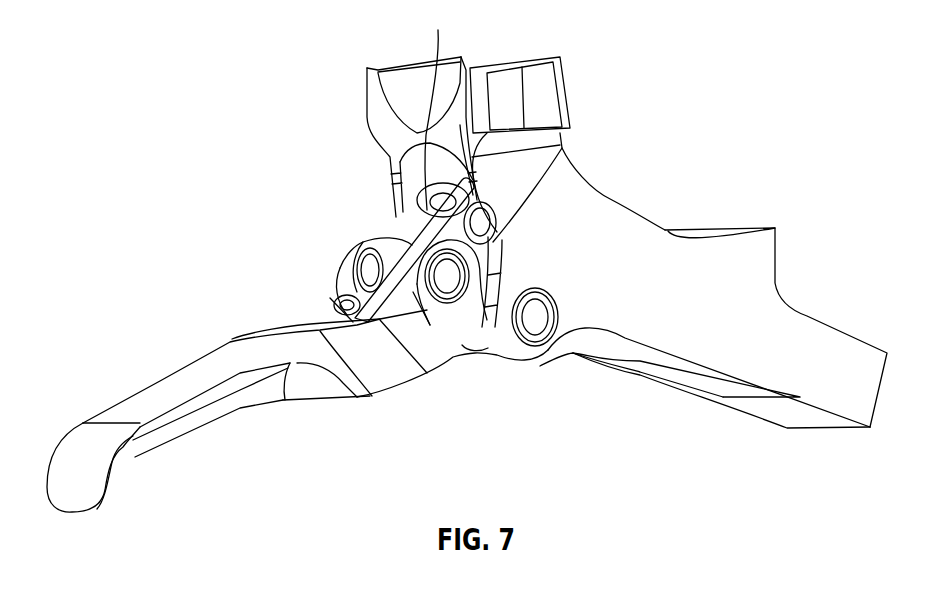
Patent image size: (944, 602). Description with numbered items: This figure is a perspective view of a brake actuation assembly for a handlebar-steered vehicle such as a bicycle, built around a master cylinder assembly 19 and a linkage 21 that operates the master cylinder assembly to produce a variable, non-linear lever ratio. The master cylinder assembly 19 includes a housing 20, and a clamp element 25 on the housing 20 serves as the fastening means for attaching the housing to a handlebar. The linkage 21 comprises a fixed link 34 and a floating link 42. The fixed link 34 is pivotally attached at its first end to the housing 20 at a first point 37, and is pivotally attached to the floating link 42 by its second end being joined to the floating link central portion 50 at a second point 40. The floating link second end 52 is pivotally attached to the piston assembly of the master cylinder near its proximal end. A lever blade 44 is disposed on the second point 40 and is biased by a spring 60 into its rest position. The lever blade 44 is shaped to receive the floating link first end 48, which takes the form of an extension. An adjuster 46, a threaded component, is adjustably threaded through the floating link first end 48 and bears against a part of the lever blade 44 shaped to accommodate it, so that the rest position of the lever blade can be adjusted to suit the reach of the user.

The master cylinder assembly 19 is at (612, 198).
The housing 20 is at (666, 229).
The linkage 21 is at (374, 213).
The clamp element 25 is at (548, 93).
The fixed link 34 is at (477, 357).
The first point 37 is at (550, 340).
The second point 40 is at (450, 280).
The floating link 42 is at (390, 208).
The lever blade 44 is at (216, 410).
The adjuster 46 is at (340, 300).
The floating link first end 48 is at (340, 322).
The floating link central portion 50 is at (563, 158).
The floating link second end 52 is at (422, 111).
The spring 60 is at (370, 238).